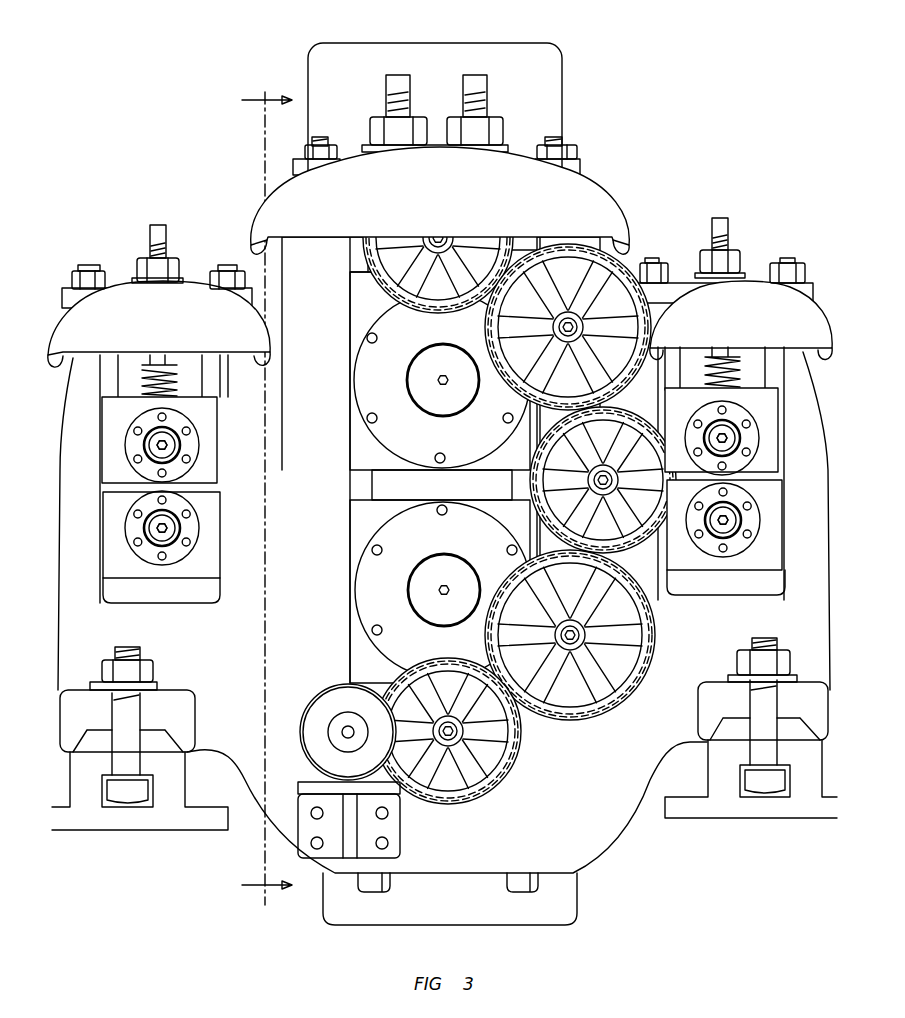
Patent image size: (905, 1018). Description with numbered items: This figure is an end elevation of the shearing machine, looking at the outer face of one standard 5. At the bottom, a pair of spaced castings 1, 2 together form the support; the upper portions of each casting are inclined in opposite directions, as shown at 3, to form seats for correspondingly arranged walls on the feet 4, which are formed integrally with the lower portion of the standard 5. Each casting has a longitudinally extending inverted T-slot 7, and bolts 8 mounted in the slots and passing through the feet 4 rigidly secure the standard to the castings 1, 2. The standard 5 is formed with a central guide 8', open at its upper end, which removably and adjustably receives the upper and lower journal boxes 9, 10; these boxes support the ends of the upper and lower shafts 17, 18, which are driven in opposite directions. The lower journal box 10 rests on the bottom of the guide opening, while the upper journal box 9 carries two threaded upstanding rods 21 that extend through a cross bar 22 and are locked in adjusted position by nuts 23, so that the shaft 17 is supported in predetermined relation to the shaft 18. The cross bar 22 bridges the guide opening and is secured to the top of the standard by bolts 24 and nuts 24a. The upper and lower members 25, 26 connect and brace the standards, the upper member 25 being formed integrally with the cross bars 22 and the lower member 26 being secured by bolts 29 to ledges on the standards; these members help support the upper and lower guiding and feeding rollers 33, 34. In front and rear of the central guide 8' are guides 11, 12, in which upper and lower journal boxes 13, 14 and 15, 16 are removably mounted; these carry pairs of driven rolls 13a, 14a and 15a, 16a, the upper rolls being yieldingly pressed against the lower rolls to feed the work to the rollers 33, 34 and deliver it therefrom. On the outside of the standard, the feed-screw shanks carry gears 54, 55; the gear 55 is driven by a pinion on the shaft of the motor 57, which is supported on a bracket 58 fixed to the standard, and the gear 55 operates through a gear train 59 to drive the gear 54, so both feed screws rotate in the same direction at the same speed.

The casting 1 is at (155, 815).
The casting 2 is at (790, 803).
The inclined seat 3 is at (177, 742).
The foot 4 is at (178, 724).
The standard 5 is at (447, 496).
The inverted T-slot 7 is at (110, 755).
The bolt 8 is at (449, 706).
The guide 8' is at (412, 492).
The upper journal box 9 is at (366, 452).
The lower journal box 10 is at (367, 540).
The guide 11 is at (205, 376).
The guide 12 is at (770, 368).
The upper journal box 13 is at (200, 466).
The driven roll 13a is at (168, 440).
The lower journal box 14 is at (200, 505).
The driven roll 14a is at (172, 528).
The upper journal box 15 is at (757, 410).
The driven roll 15a is at (737, 437).
The lower journal box 16 is at (765, 505).
The driven roll 16a is at (735, 522).
The upper shaft 17 is at (416, 388).
The lower shaft 18 is at (421, 590).
The upstanding rod 21 is at (474, 262).
The cross bar 22 is at (440, 200).
The nut 23 is at (376, 128).
The bolt 24 is at (312, 140).
The nut 24a is at (307, 155).
The upper member 25 is at (530, 47).
The lower member 26 is at (441, 895).
The bolt 29 is at (372, 888).
The upper guiding and feeding roller 33 is at (433, 475).
The lower guiding and feeding roller 34 is at (430, 493).
The gear 54 is at (508, 222).
The gear 55 is at (512, 757).
The motor 57 is at (334, 703).
The bracket 58 is at (388, 824).
The gear train 59 is at (654, 642).